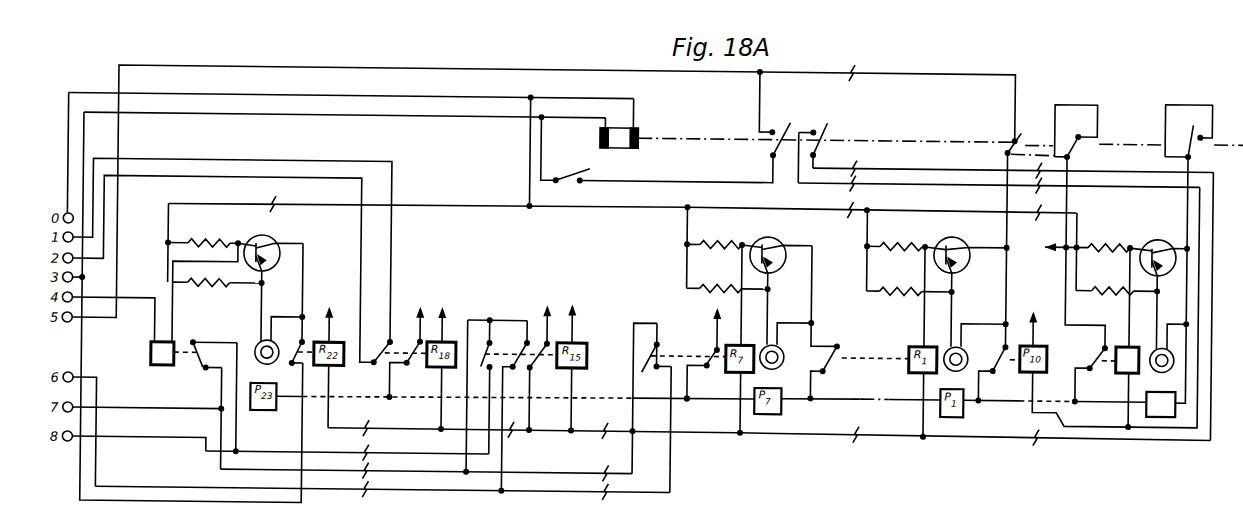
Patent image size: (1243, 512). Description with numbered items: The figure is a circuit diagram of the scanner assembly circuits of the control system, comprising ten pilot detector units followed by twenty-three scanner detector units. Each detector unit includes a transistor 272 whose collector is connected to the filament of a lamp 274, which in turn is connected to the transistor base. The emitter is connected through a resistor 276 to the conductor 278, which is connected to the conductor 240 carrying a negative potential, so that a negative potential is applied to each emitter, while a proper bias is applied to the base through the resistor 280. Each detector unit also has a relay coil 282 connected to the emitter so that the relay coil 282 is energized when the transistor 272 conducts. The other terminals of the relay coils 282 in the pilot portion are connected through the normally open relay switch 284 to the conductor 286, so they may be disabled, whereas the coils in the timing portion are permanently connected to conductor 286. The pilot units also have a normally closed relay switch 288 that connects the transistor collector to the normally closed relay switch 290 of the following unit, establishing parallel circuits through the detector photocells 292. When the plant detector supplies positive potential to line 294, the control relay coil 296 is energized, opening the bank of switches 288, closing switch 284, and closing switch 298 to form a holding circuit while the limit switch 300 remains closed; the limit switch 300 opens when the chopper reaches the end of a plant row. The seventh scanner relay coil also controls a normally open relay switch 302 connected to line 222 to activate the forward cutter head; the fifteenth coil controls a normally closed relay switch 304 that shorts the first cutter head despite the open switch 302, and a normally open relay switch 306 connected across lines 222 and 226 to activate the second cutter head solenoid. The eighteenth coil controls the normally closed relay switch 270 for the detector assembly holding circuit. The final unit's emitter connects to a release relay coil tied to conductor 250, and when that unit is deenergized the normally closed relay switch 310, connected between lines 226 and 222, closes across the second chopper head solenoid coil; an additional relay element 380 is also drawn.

The line 222 is at (449, 472).
The line 226 is at (354, 455).
The conductor 240 is at (494, 98).
The conductor 250 is at (100, 303).
The normally closed relay switch 270 is at (381, 336).
The transistor 272 is at (1157, 242).
The lamp 274 is at (1150, 340).
The resistor 276 is at (1108, 240).
The conductor 278 is at (975, 202).
The resistor 280 is at (1108, 284).
The relay coil 282 is at (1116, 366).
The normally open relay switch 284 is at (830, 133).
The conductor 286 is at (938, 435).
The normally closed relay switch 288 is at (1192, 115).
The normally closed relay switch 290 is at (544, 341).
The detector photocell 292 is at (1145, 399).
The line 294 is at (362, 119).
The control relay coil 296 is at (620, 143).
The switch 298 is at (793, 113).
The limit switch 300 is at (567, 183).
The normally open relay switch 302 is at (662, 337).
The normally closed relay switch 304 is at (513, 348).
The normally open relay switch 306 is at (478, 352).
The normally closed relay switch 310 is at (206, 345).
The relay 380 is at (153, 358).